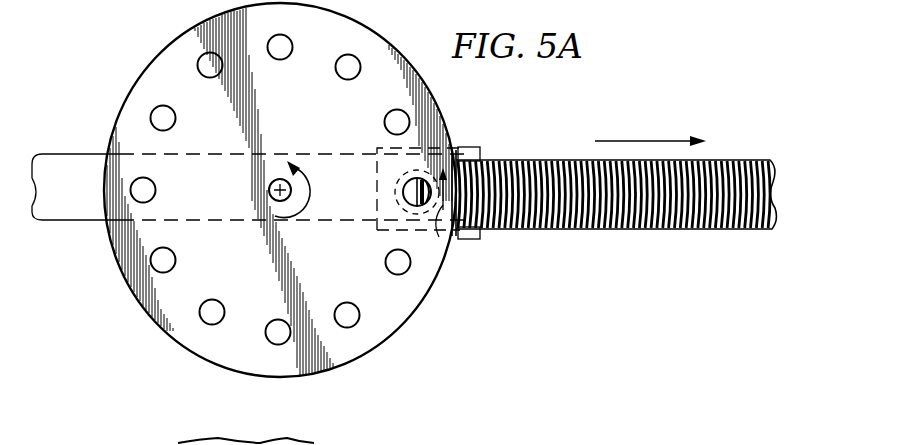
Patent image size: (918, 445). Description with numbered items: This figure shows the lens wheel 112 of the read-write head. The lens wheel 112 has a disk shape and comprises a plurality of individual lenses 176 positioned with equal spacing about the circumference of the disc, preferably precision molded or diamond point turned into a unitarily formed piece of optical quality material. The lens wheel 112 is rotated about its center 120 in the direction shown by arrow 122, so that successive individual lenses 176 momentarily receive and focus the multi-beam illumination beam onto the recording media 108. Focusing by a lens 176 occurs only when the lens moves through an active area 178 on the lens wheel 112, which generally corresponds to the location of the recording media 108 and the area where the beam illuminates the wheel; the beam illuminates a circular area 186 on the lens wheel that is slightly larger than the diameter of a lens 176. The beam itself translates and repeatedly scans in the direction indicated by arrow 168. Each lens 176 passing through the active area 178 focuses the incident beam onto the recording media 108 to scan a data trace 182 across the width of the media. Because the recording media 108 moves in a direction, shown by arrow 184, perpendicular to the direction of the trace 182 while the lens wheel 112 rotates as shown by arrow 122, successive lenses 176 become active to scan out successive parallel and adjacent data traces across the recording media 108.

The lens wheel 112 is at (148, 64).
The individual lenses 176 is at (336, 68).
The center 120 is at (282, 178).
The arrow 122 is at (291, 219).
The arrow 168 is at (442, 240).
The circular area 186 is at (382, 173).
The active area 178 is at (478, 148).
The recording media 108 is at (534, 160).
The data trace 182 is at (403, 192).
The arrow 184 is at (645, 137).